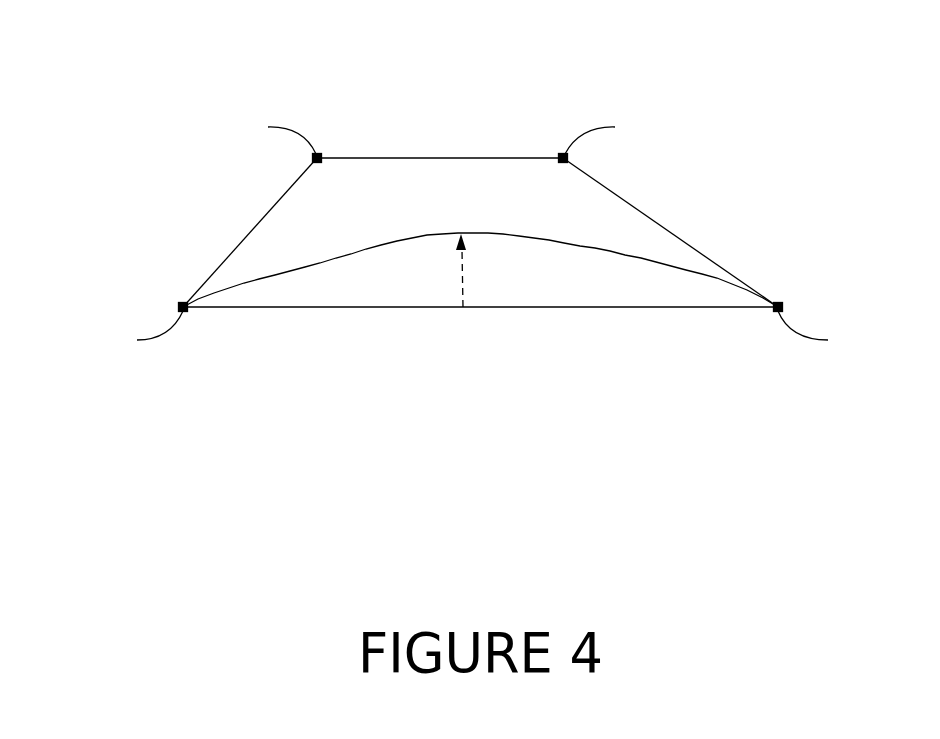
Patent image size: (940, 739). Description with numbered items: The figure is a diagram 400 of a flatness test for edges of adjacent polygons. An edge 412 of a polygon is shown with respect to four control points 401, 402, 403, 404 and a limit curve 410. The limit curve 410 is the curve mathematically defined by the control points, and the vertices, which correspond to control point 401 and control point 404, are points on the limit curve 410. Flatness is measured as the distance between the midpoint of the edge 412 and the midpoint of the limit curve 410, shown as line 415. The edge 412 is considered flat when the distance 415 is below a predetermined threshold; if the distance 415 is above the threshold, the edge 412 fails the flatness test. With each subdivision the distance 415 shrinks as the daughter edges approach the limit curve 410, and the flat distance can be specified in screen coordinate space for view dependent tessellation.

The flatness test diagram 400 is at (445, 128).
The control point 401 is at (118, 357).
The control point 402 is at (232, 125).
The control point 403 is at (650, 125).
The control point 404 is at (843, 357).
The limit curve 410 is at (581, 272).
The edge 412 is at (416, 320).
The distance 415 is at (480, 283).